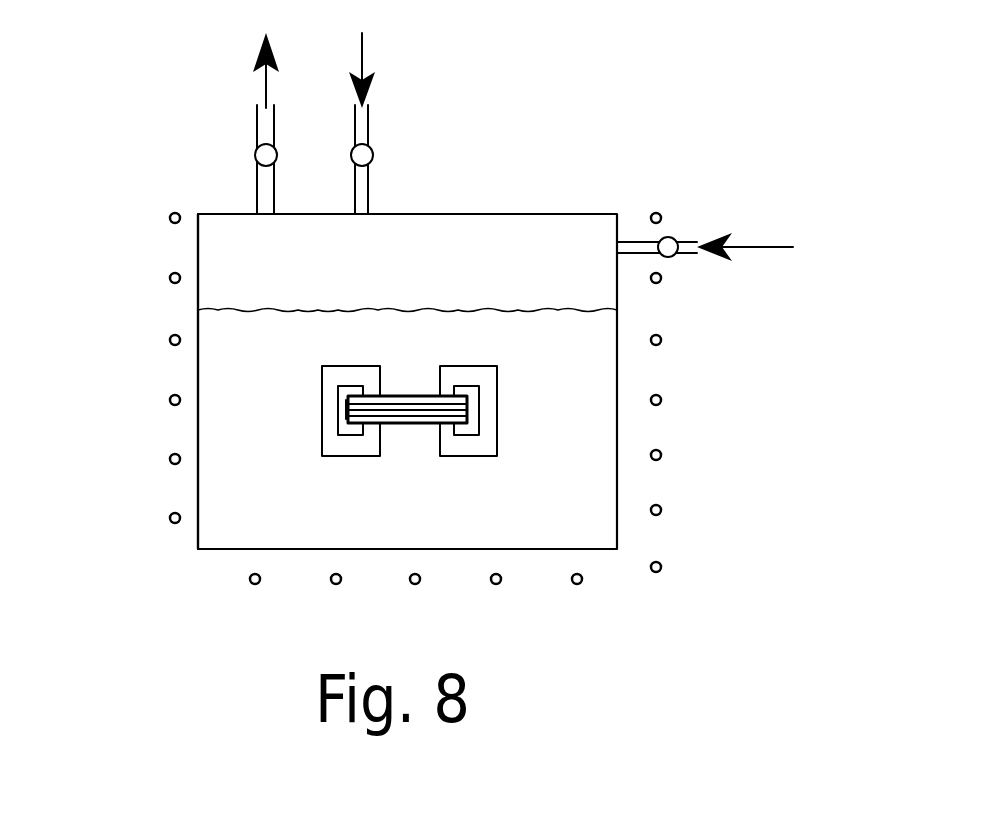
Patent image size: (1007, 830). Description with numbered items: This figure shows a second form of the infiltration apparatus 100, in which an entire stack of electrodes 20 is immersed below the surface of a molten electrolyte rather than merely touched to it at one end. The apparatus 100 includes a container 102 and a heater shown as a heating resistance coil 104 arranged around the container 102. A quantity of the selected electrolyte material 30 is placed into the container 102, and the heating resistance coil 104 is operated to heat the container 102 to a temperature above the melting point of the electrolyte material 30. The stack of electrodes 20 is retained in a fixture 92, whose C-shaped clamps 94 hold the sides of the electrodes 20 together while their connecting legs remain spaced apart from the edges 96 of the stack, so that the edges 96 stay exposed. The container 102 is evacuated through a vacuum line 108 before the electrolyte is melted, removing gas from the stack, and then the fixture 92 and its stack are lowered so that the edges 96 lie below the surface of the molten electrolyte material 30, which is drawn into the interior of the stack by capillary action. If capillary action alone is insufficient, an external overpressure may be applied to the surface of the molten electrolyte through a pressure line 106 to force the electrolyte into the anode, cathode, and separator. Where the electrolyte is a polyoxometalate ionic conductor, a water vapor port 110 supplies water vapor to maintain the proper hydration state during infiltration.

The infiltration apparatus 100 is at (134, 371).
The electrolyte material 30 is at (617, 365).
The container 102 is at (198, 490).
The heating resistance coil 104 is at (170, 519).
The vacuum line 108 is at (257, 185).
The water vapor port 110 is at (368, 182).
The pressure line 106 is at (687, 257).
The C-shaped clamps 94 is at (345, 445).
The fixture 92 is at (473, 473).
The electrodes 20 is at (410, 425).
The edges of the stack 96 is at (347, 410).